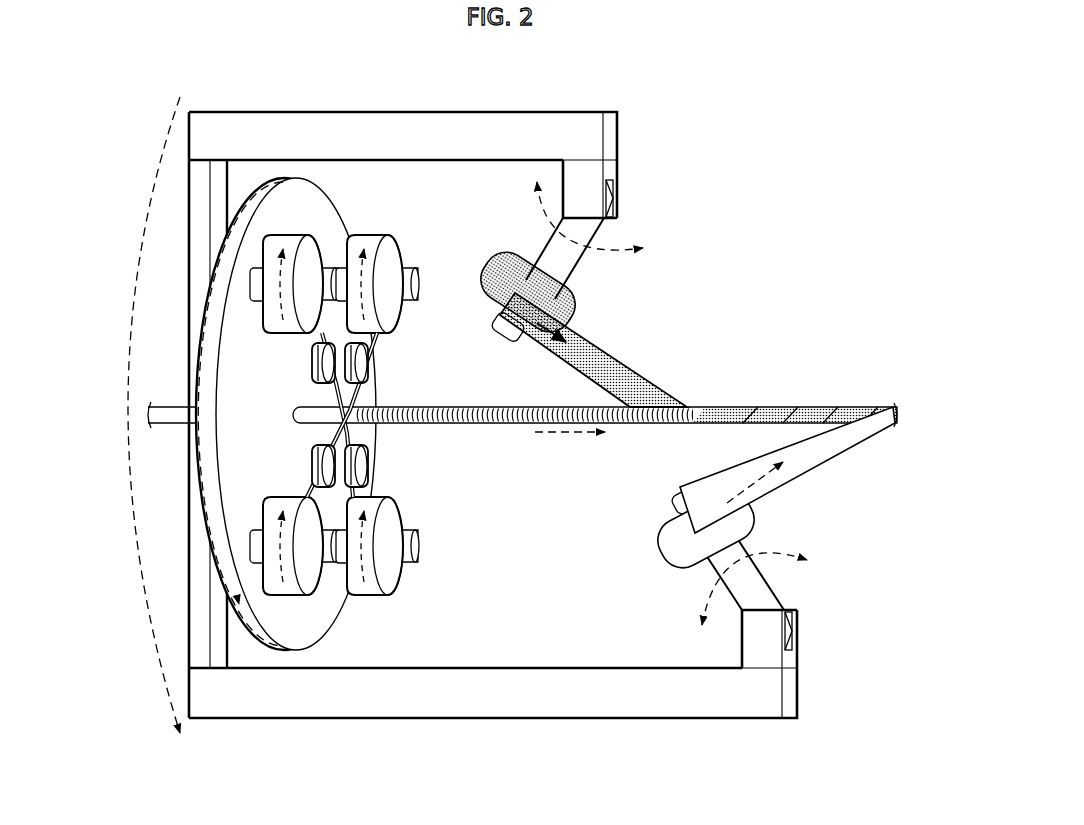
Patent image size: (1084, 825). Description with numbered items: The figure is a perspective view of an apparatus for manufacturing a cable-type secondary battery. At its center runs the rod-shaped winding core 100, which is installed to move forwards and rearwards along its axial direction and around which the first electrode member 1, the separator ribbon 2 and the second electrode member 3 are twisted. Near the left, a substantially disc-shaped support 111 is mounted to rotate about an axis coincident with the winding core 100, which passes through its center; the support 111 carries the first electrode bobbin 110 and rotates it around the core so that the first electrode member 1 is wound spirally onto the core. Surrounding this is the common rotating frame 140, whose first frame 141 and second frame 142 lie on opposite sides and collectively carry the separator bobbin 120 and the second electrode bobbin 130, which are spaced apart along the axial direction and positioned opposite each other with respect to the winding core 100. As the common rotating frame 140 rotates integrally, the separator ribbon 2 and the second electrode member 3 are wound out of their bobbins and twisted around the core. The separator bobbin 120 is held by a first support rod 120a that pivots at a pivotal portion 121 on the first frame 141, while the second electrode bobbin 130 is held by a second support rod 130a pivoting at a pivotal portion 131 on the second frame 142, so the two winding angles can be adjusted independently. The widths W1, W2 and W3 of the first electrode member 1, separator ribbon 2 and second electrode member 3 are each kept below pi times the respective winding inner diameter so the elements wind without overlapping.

The first electrode member 1 is at (372, 397).
The separator ribbon 2 is at (637, 368).
The second electrode member 3 is at (830, 450).
The winding core 100 is at (786, 403).
The first electrode bobbin 110 is at (393, 234).
The support 111 is at (291, 178).
The separator bobbin 120 is at (582, 299).
The first support rod 120a is at (540, 252).
The pivotal portion 121 is at (632, 199).
The second electrode bobbin 130 is at (668, 557).
The second support rod 130a is at (777, 589).
The pivotal portion 131 is at (810, 640).
The common rotating frame 140 is at (185, 168).
The first frame 141 is at (473, 112).
The second frame 142 is at (547, 667).
The width of the first electrode member W1 is at (347, 438).
The width of the separator ribbon W2 is at (617, 318).
The width of the second electrode member W3 is at (773, 403).